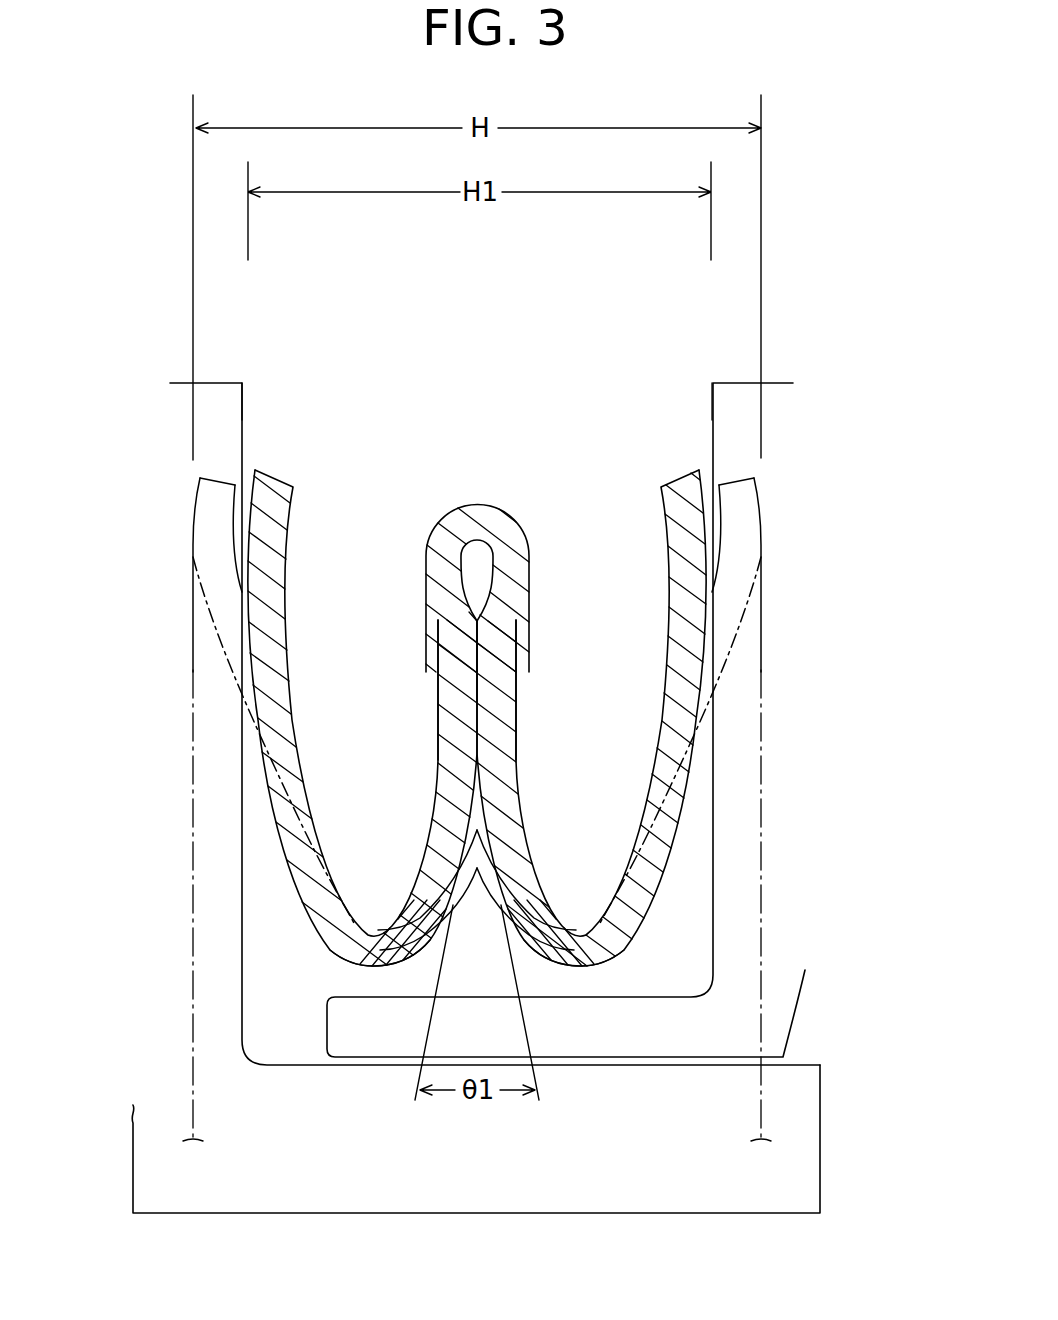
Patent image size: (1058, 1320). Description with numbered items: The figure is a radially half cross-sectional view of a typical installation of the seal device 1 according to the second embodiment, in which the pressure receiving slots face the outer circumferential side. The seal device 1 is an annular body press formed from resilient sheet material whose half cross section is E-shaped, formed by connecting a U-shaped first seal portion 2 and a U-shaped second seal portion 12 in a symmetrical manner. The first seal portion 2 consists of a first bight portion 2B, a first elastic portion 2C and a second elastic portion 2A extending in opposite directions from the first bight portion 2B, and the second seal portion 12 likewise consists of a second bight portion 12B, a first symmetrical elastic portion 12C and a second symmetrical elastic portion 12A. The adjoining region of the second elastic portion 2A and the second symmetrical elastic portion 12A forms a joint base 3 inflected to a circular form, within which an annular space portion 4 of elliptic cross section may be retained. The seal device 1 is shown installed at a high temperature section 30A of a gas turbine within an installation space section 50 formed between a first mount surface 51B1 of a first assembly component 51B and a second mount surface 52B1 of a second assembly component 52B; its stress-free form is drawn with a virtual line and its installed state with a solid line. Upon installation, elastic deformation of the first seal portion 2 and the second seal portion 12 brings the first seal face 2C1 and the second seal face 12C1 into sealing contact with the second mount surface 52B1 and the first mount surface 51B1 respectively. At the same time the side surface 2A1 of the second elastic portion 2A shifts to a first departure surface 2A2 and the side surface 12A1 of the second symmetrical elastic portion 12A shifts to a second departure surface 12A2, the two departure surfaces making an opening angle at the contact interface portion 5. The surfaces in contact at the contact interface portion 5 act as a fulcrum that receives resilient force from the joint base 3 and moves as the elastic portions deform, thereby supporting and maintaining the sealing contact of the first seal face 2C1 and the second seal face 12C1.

The seal device 1 is at (556, 524).
The first seal portion 2 is at (780, 465).
The joint base 3 is at (483, 525).
The annular space portion 4 is at (483, 558).
The contact interface portion 5 is at (467, 617).
The second seal portion 12 is at (291, 463).
The second symmetrical elastic portion 12A is at (450, 705).
The side surface of the second symmetrical elastic portion 12A1 is at (492, 848).
The second departure surface 12A2 is at (503, 812).
The second bight portion 12B is at (388, 950).
The first symmetrical elastic portion 12C is at (272, 727).
The second seal face 12C1 is at (235, 553).
The second elastic portion 2A is at (500, 697).
The side surface of the second elastic portion 2A1 is at (463, 852).
The first departure surface 2A2 is at (458, 888).
The first bight portion 2B is at (566, 950).
The first elastic portion 2C is at (735, 603).
The first seal face 2C1 is at (762, 530).
The high temperature section 30A is at (419, 1200).
The installation space section 50 is at (680, 935).
The first assembly component 51B is at (205, 953).
The first mount surface 51B1 is at (243, 408).
The second assembly component 52B is at (745, 806).
The second mount surface 52B1 is at (711, 408).